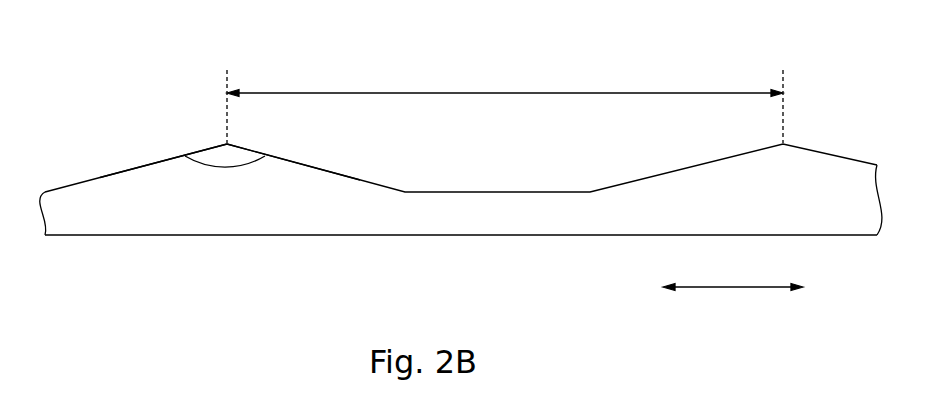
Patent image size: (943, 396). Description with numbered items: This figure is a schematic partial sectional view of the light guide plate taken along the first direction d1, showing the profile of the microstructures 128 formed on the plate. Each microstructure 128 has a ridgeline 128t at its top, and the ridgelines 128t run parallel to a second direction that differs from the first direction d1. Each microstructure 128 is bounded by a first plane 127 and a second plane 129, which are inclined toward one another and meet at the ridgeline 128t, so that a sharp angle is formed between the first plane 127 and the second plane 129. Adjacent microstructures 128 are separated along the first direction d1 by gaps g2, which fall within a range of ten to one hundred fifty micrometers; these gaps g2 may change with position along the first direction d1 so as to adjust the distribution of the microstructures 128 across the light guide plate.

The first plane 127 is at (145, 163).
The microstructure 128 is at (93, 190).
The ridgeline 128t is at (227, 143).
The second plane 129 is at (303, 165).
The gap g2 is at (505, 81).
The first direction d1 is at (733, 302).